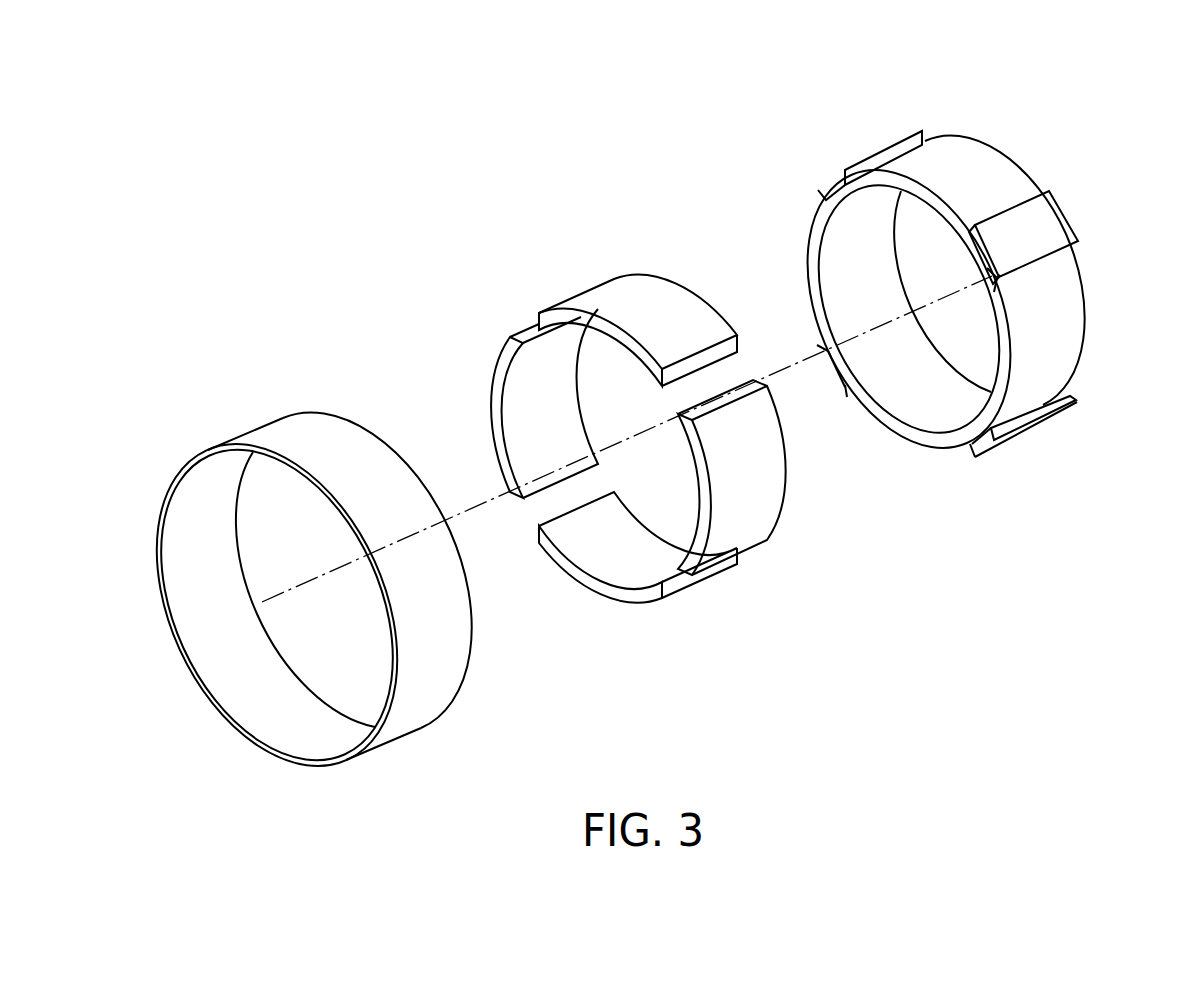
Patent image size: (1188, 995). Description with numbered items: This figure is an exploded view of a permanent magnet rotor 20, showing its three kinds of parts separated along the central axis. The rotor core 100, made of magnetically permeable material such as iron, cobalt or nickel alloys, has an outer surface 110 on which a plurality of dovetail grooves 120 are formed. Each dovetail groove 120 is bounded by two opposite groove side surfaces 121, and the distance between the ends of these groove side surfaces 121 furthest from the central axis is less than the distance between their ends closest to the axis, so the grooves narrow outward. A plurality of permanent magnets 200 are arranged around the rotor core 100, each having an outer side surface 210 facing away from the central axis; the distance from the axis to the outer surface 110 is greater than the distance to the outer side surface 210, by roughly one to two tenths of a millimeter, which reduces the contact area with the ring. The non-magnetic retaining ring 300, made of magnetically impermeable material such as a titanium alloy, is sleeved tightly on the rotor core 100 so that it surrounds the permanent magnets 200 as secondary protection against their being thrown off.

The permanent magnet rotor 20 is at (277, 112).
The rotor core 100 is at (960, 126).
The outer surface 110 is at (1045, 218).
The dovetail groove 120 is at (976, 174).
The groove side surface 121 is at (1000, 281).
The permanent magnet 200 is at (641, 256).
The outer side surface 210 is at (666, 322).
The non-magnetic retaining ring 300 is at (310, 437).